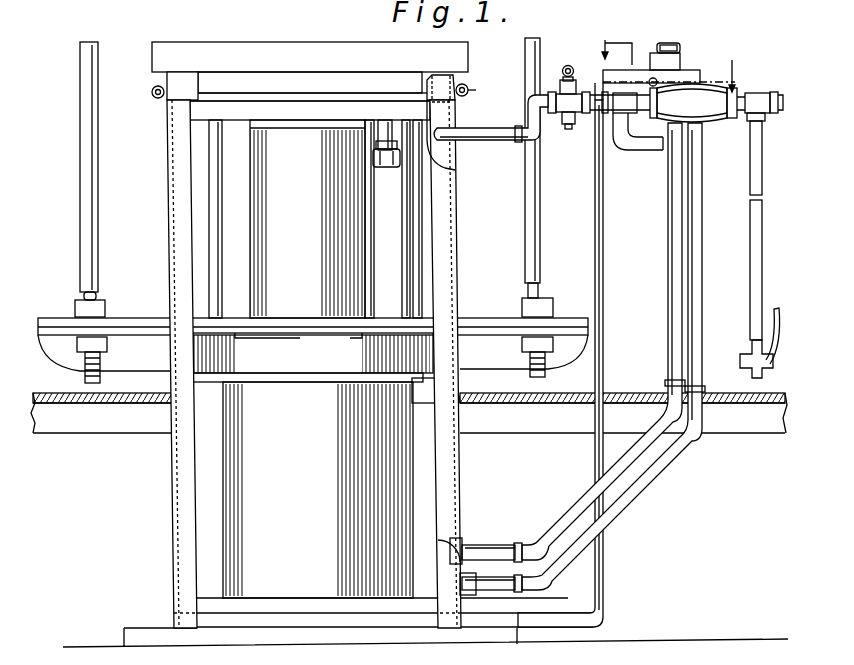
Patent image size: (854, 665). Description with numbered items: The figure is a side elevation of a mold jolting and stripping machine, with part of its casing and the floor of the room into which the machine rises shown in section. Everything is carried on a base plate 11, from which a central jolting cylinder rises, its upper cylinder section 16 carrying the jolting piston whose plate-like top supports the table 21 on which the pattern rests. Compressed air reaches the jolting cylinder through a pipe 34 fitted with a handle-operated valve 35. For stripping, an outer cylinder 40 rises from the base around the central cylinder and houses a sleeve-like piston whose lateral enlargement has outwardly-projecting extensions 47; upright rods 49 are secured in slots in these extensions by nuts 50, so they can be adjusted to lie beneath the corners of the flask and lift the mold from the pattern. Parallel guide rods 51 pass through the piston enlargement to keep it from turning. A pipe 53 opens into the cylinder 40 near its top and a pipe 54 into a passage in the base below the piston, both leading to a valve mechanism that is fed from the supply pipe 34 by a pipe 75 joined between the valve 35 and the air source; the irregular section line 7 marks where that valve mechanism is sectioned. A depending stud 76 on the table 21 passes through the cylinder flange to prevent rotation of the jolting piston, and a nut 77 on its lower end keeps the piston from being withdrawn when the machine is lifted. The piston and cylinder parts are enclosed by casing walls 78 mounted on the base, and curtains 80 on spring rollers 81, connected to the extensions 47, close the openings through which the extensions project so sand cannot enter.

The section line 7— 7 is at (670, 67).
The base plate 11 is at (170, 640).
The upper cylinder section 16 is at (270, 181).
The table 21 is at (259, 49).
The pipe 34 is at (498, 140).
The handle-operated valve 35 is at (565, 100).
The cylinder 40 is at (240, 505).
The extensions 47 is at (62, 345).
The upright rods 49 is at (82, 127).
The nuts 50 is at (95, 340).
The guide rods 51 is at (215, 230).
The pipe 53 is at (437, 482).
The pipe 54 is at (488, 590).
The pipe 75 is at (652, 143).
The depending stud 76 is at (392, 132).
The nut 77 is at (398, 160).
The casing walls 78 is at (173, 467).
The curtains 80 is at (168, 189).
The spring rollers 81 is at (153, 89).